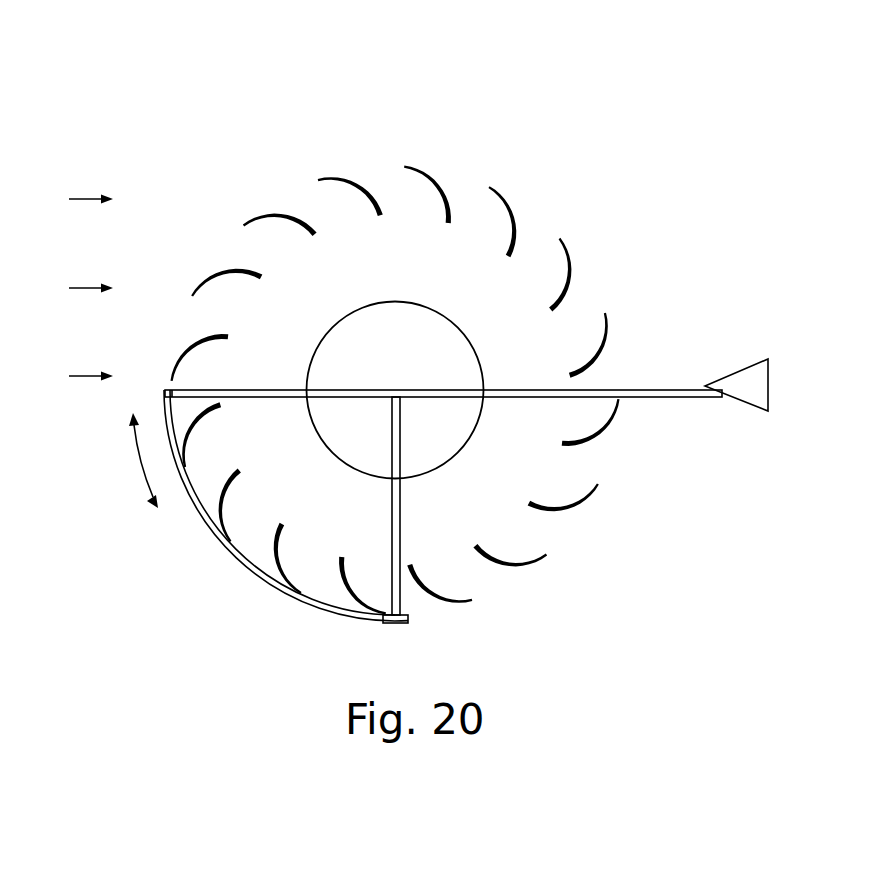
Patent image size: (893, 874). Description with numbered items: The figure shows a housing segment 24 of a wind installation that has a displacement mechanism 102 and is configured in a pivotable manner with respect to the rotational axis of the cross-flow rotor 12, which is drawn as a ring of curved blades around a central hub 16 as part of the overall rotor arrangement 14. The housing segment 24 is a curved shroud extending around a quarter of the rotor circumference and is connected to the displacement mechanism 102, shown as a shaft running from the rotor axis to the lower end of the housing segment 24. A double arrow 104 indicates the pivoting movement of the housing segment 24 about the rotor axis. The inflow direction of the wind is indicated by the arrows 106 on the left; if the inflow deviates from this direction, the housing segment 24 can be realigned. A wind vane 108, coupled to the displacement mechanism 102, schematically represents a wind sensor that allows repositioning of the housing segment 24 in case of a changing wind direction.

The cross-flow rotor 12 is at (358, 165).
The fan assembly 14 is at (141, 582).
The hub 16 is at (381, 290).
The housing segment 24 is at (252, 577).
The displacement mechanism 102 is at (400, 490).
The double arrow 104 is at (140, 472).
The arrows 106 is at (83, 198).
The wind vane 108 is at (668, 389).